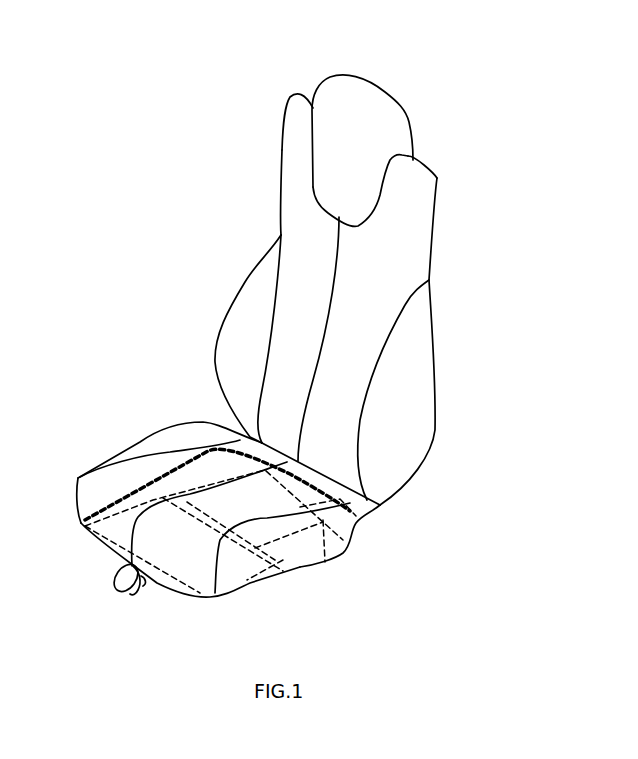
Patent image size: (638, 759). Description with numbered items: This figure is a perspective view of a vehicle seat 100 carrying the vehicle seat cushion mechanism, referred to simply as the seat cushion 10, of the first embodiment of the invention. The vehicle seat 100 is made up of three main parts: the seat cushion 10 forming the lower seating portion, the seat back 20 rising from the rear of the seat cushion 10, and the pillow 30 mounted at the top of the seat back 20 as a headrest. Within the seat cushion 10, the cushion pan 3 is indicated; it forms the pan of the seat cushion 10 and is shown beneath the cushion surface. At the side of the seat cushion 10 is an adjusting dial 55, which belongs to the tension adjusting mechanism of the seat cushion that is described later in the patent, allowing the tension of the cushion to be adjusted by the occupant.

The vehicle seat 100 is at (168, 185).
The pillow 30 is at (395, 110).
The seat back 20 is at (435, 193).
The seat cushion 10 is at (133, 470).
The cushion pan 3 is at (243, 591).
The adjusting dial 55 is at (118, 584).